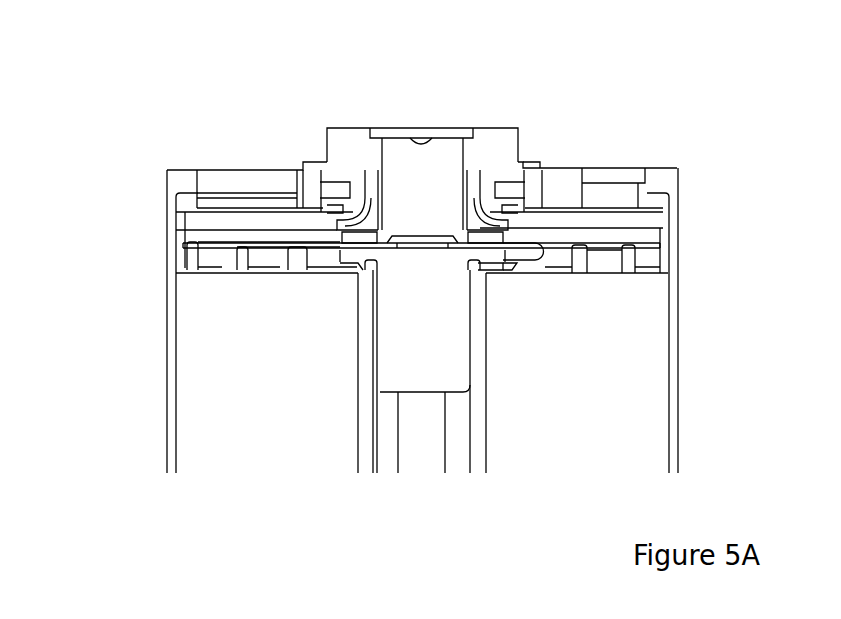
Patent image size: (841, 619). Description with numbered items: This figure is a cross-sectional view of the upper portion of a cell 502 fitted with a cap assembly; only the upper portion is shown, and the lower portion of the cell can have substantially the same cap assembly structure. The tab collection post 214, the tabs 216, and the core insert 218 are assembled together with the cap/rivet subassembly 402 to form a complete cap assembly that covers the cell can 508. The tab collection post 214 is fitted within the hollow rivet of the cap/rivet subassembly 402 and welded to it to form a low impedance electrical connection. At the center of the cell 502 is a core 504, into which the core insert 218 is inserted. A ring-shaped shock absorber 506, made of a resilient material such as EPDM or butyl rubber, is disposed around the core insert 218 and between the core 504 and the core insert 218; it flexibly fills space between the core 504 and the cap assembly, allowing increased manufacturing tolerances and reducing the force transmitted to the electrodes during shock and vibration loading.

The cell 502 is at (93, 118).
The cap/rivet subassembly 402 is at (556, 122).
The tab collection post 214 is at (452, 188).
The tabs 216 is at (610, 240).
The core insert 218 is at (450, 347).
The cell can 508 is at (166, 465).
The shock absorber 506 is at (468, 265).
The core 504 is at (368, 476).